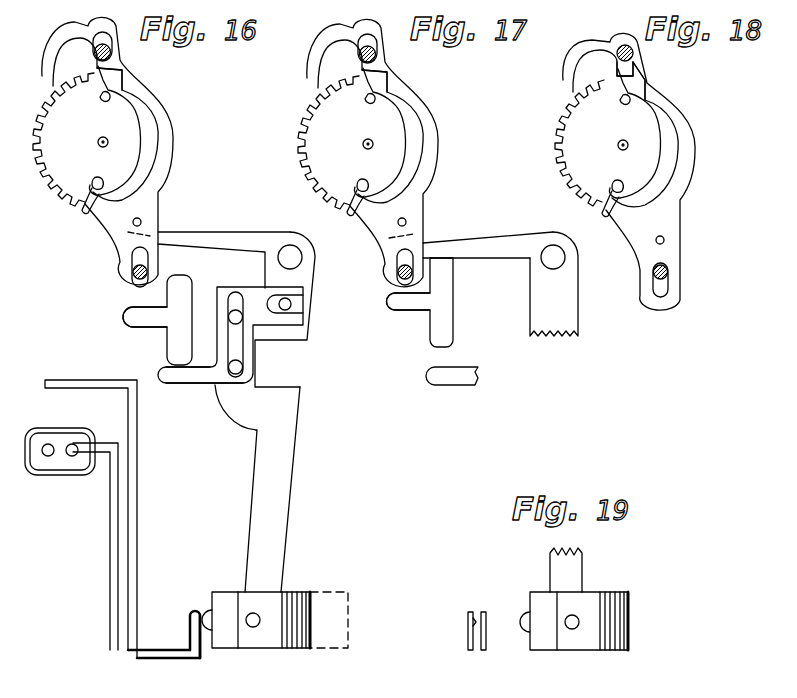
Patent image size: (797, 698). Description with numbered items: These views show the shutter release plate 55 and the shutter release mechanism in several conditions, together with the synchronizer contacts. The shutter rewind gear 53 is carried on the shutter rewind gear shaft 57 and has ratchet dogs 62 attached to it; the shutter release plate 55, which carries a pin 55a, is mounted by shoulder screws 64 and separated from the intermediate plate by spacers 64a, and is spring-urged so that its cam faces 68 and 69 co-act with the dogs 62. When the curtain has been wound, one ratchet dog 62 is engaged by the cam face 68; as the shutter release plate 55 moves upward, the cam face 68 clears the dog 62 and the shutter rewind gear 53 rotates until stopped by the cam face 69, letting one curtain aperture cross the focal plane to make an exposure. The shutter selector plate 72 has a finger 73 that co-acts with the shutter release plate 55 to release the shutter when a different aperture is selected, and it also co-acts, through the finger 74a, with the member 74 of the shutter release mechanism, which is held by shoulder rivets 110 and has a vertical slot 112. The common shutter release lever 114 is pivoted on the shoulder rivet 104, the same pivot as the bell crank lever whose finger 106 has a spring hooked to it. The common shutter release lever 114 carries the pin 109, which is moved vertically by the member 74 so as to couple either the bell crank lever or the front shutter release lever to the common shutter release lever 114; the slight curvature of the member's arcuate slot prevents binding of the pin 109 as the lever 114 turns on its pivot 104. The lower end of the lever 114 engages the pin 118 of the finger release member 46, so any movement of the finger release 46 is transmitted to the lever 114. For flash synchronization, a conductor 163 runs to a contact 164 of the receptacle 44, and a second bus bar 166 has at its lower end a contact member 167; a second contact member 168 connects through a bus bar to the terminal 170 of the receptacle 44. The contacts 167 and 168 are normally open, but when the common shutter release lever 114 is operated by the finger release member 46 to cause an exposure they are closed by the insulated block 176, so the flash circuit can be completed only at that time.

In FIG. 16, the receptacle 44 is at (63, 476).
In FIG. 16, the finger release member 46 is at (285, 600).
In FIG. 19, the finger release member 46 is at (622, 628).
In FIG. 16, the shutter rewind gear 53 is at (42, 168).
In FIG. 17, the shutter rewind gear 53 is at (310, 158).
In FIG. 18, the shutter rewind gear 53 is at (570, 133).
In FIG. 16, the shutter release plate 55 is at (172, 155).
In FIG. 17, the shutter release plate 55 is at (388, 152).
In FIG. 18, the shutter release plate 55 is at (700, 156).
In FIG. 16, the pin 55a is at (141, 222).
In FIG. 17, the pin 55a is at (428, 222).
In FIG. 18, the pin 55a is at (666, 240).
In FIG. 16, the shutter rewind gear shaft 57 is at (97, 142).
In FIG. 17, the shutter rewind gear shaft 57 is at (350, 145).
In FIG. 18, the shutter rewind gear shaft 57 is at (608, 147).
In FIG. 16, the ratchet dogs 62 is at (98, 97).
In FIG. 17, the ratchet dogs 62 is at (366, 132).
In FIG. 18, the ratchet dogs 62 is at (628, 133).
In FIG. 16, the shoulder screws 64 is at (110, 46).
In FIG. 17, the shoulder screws 64 is at (385, 152).
In FIG. 18, the shoulder screws 64 is at (635, 53).
In FIG. 18, the spacers 64a is at (632, 68).
In FIG. 16, the cam face 68 is at (125, 83).
In FIG. 17, the cam face 68 is at (402, 78).
In FIG. 18, the cam face 68 is at (650, 105).
In FIG. 16, the cam face 69 is at (93, 212).
In FIG. 17, the cam face 69 is at (350, 214).
In FIG. 18, the cam face 69 is at (630, 204).
In FIG. 16, the shutter selector plate 72 is at (170, 345).
In FIG. 17, the shutter selector plate 72 is at (432, 338).
In FIG. 16, the finger 73 is at (130, 317).
In FIG. 17, the finger 73 is at (410, 310).
In FIG. 16, the member of the shutter release mechanism 74 is at (222, 292).
In FIG. 16, the finger 74a is at (198, 383).
In FIG. 17, the finger 74a is at (458, 370).
In FIG. 16, the shoulder rivet 104 is at (292, 257).
In FIG. 17, the shoulder rivet 104 is at (557, 257).
In FIG. 16, the finger 106 is at (242, 234).
In FIG. 17, the finger 106 is at (505, 240).
In FIG. 16, the pin 109 is at (292, 305).
In FIG. 16, the shoulder rivets 110 is at (236, 300).
In FIG. 16, the vertical slot 112 is at (238, 350).
In FIG. 16, the common shutter release lever 114 is at (282, 518).
In FIG. 19, the common shutter release lever 114 is at (575, 573).
In FIG. 16, the pin 118 is at (254, 628).
In FIG. 19, the pin 118 is at (572, 630).
In FIG. 16, the conductor 163 is at (110, 530).
In FIG. 16, the contact 164 is at (48, 444).
In FIG. 16, the second bus bar 166 is at (137, 523).
In FIG. 16, the contact member 167 is at (190, 628).
In FIG. 19, the contact member 167 is at (468, 632).
In FIG. 16, the second contact member 168 is at (203, 650).
In FIG. 19, the second contact member 168 is at (484, 650).
In FIG. 16, the terminal 170 is at (74, 444).
In FIG. 16, the insulated block 176 is at (225, 602).
In FIG. 19, the insulated block 176 is at (535, 601).